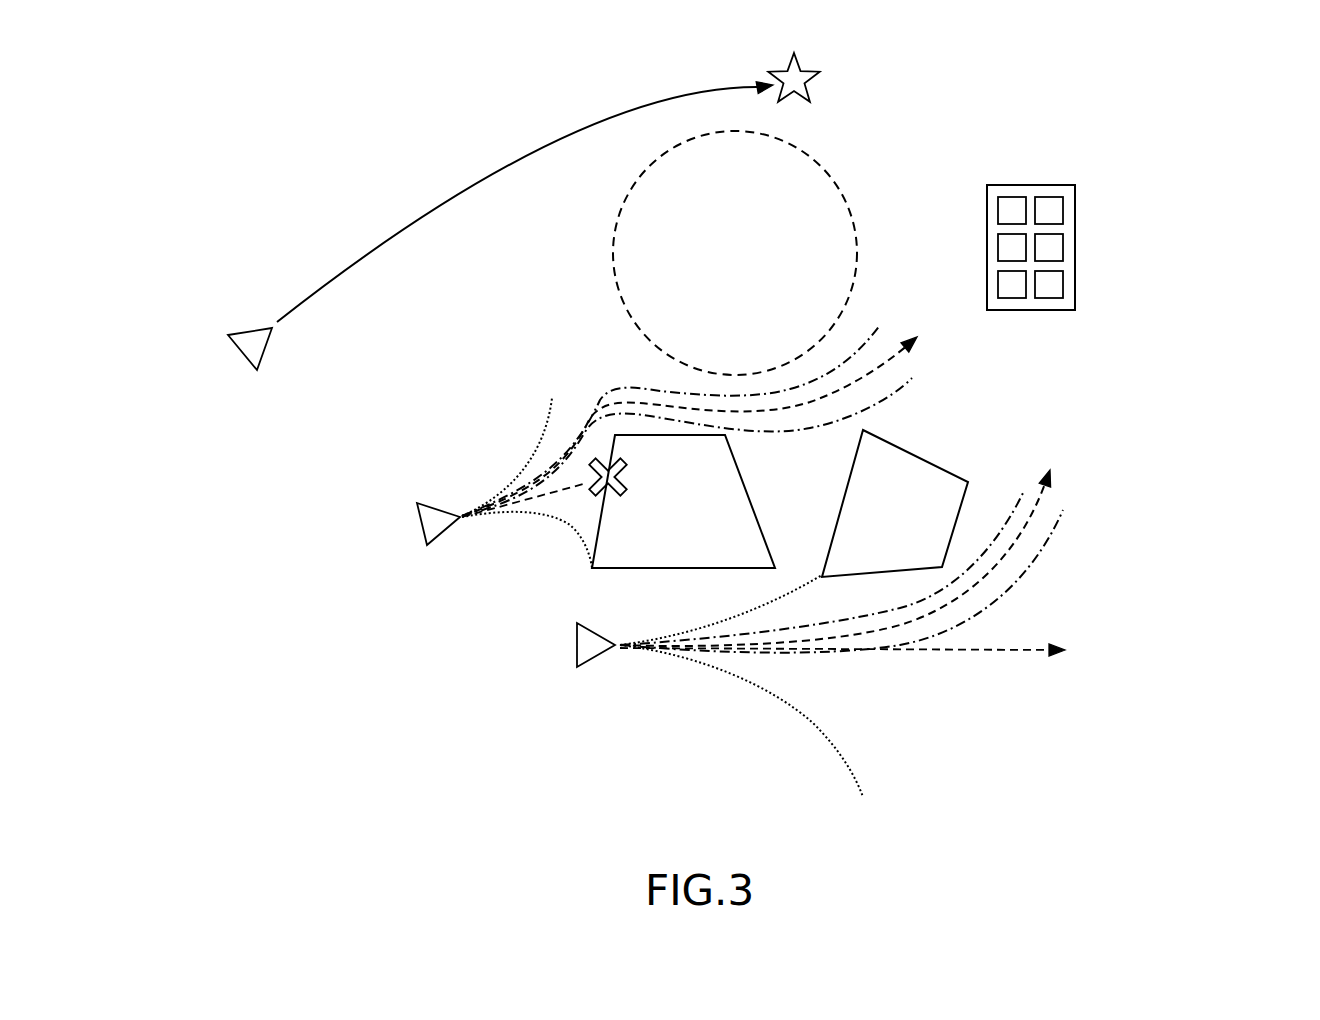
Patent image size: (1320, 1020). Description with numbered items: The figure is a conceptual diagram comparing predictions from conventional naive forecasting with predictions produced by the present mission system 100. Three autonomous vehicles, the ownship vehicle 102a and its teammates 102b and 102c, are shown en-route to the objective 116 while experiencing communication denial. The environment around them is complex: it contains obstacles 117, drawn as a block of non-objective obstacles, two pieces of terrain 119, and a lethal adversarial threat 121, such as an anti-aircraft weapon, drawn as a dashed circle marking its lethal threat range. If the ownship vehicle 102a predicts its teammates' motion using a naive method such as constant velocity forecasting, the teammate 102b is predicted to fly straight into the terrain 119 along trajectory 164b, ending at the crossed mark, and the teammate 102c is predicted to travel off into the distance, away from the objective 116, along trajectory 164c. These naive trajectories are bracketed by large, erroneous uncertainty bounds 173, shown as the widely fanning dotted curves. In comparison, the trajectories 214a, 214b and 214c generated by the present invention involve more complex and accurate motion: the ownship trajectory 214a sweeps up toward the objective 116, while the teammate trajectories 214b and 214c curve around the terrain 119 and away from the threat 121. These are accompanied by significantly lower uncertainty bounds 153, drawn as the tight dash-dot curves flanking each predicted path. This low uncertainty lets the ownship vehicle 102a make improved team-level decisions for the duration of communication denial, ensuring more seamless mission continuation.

The mission system 100 is at (293, 108).
The ownship vehicle 102a is at (240, 350).
The teammate AV 102b is at (420, 527).
The teammate AV 102c is at (577, 650).
The objective 116 is at (806, 72).
The obstacles 117 is at (987, 212).
The terrain 119 is at (753, 497).
The lethal adversarial threat 121 is at (822, 165).
The uncertainty bounds 153 is at (870, 343).
The trajectory 164b is at (548, 495).
The trajectory 164c is at (1010, 652).
The uncertainty bounds 173 is at (545, 452).
The trajectory 214a is at (486, 167).
The trajectory 214b is at (900, 350).
The trajectory 214c is at (1040, 500).